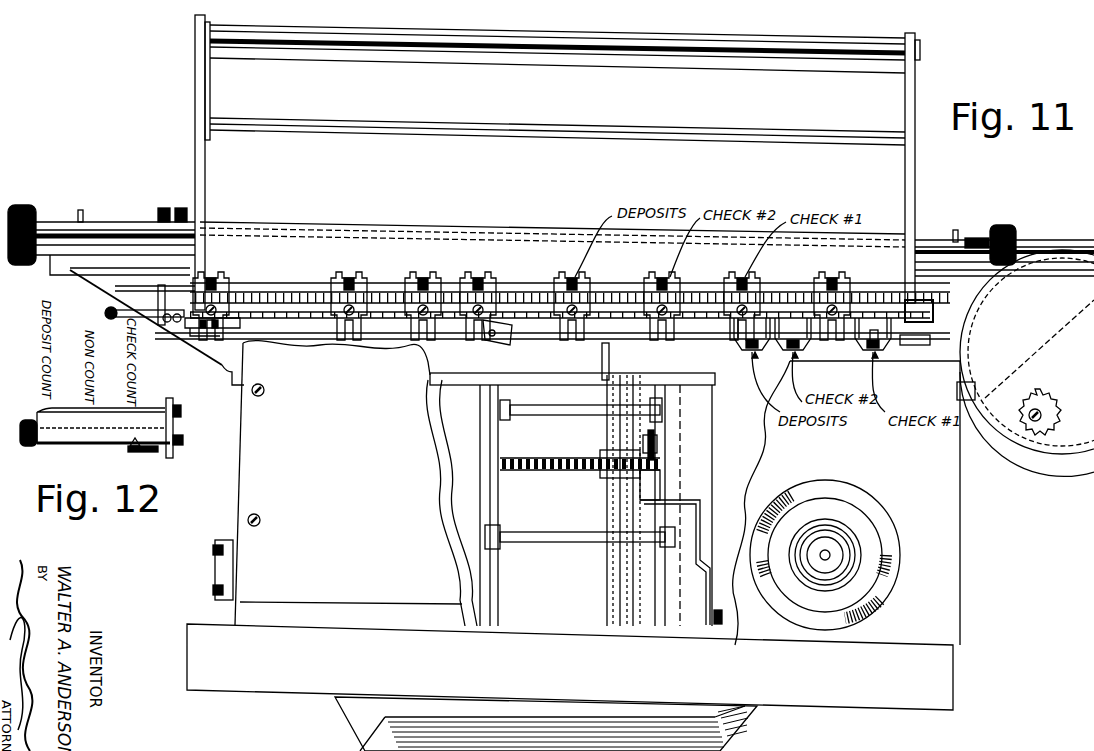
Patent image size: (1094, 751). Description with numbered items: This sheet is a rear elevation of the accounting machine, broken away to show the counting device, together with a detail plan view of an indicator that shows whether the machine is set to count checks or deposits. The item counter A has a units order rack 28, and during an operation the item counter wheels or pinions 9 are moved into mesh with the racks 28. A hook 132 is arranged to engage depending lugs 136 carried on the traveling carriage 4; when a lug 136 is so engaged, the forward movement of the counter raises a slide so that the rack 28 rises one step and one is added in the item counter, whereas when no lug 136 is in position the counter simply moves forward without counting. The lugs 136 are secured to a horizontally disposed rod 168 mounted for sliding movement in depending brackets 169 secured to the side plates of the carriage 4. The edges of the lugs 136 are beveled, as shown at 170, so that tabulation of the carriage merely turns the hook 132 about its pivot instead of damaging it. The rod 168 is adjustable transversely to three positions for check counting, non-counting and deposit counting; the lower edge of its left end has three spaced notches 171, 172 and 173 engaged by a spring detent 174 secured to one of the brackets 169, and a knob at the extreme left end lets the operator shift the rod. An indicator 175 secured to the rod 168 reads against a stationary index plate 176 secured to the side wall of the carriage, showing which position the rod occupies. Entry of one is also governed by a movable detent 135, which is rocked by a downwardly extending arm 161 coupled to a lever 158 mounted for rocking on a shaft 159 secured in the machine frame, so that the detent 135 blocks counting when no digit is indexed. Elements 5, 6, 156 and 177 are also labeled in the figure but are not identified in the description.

In FIG. 11, the carriage 4 is at (193, 178).
In FIG. 11, the rack bar 5 is at (912, 308).
In FIG. 11, the hook bracket 6 is at (565, 278).
In FIG. 11, the item counter wheels 9 is at (608, 472).
In FIG. 11, the units order rack 28 is at (620, 592).
In FIG. 11, the hook 132 is at (601, 362).
In FIG. 11, the detent 135 is at (605, 405).
In FIG. 11, the lugs 136 is at (756, 350).
In FIG. 11, the reel housing 156 is at (720, 630).
In FIG. 11, the lever 158 is at (672, 508).
In FIG. 11, the shaft 159 is at (655, 544).
In FIG. 11, the arm 161 is at (657, 440).
In FIG. 11, the rod 168 is at (938, 336).
In FIG. 11, the brackets 169 is at (190, 333).
In FIG. 11, the beveled edges 170 is at (785, 347).
In FIG. 11, the notch 171 is at (245, 322).
In FIG. 11, the notch 172 is at (270, 322).
In FIG. 11, the notch 173 is at (297, 322).
In FIG. 11, the spring detent 174 is at (221, 365).
In FIG. 11, the indicator 175 is at (160, 315).
In FIG. 12, the indicator 175 is at (133, 448).
In FIG. 11, the index plate 176 is at (115, 289).
In FIG. 12, the index plate 176 is at (173, 412).
In FIG. 11, the plate 177 is at (490, 338).
In FIG. 11, the item counter A is at (605, 452).